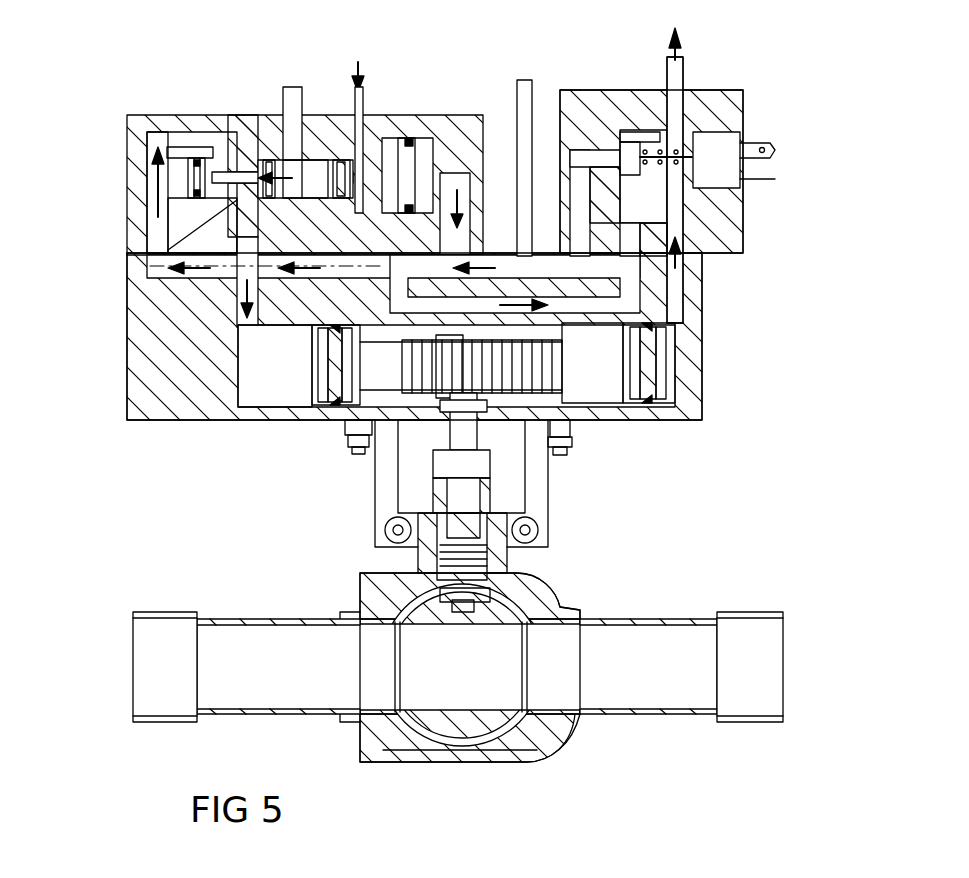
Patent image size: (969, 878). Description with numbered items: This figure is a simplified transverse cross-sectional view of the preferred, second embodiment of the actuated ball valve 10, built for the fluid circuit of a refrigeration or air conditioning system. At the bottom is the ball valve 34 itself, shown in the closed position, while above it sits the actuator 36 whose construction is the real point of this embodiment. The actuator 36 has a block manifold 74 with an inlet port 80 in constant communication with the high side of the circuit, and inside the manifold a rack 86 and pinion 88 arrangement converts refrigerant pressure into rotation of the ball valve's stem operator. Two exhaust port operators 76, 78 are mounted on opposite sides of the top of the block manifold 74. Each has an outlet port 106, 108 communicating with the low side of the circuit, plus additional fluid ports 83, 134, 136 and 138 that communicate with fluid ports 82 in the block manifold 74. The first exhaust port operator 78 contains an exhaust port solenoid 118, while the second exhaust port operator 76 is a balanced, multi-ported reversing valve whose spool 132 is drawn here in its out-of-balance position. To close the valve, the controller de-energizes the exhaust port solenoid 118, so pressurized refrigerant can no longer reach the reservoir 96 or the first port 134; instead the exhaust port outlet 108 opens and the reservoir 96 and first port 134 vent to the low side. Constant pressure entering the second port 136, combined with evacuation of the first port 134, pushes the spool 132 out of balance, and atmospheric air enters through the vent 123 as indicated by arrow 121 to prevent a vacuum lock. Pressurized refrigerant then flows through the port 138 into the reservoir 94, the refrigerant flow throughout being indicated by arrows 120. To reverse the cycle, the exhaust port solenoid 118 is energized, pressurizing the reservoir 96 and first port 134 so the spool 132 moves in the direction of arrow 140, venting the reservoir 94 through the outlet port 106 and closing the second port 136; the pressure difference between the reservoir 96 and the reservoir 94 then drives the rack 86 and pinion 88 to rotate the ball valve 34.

The actuated ball valve 10 is at (135, 456).
The ball valve 34 is at (580, 572).
The actuator 36 is at (348, 497).
The block manifold 74 is at (118, 374).
The second exhaust port operator 76 is at (147, 114).
The first exhaust port operator 78 is at (588, 86).
The inlet port 80 is at (528, 100).
The fluid ports 82 is at (245, 325).
The fluid port 83 is at (598, 230).
The rack 86 is at (372, 382).
The pinion 88 is at (515, 335).
The reservoir 94 is at (245, 358).
The reservoir 96 is at (605, 400).
The outlet port 106 is at (285, 128).
The exhaust port outlet 108 is at (688, 78).
The exhaust port solenoid 118 is at (745, 136).
The arrows 120 is at (150, 176).
The arrow 121 is at (360, 66).
The vent 123 is at (366, 104).
The spool 132 is at (318, 165).
The first port 134 is at (450, 172).
The second port 136 is at (148, 206).
The port 138 is at (238, 222).
The arrow 140 is at (268, 180).